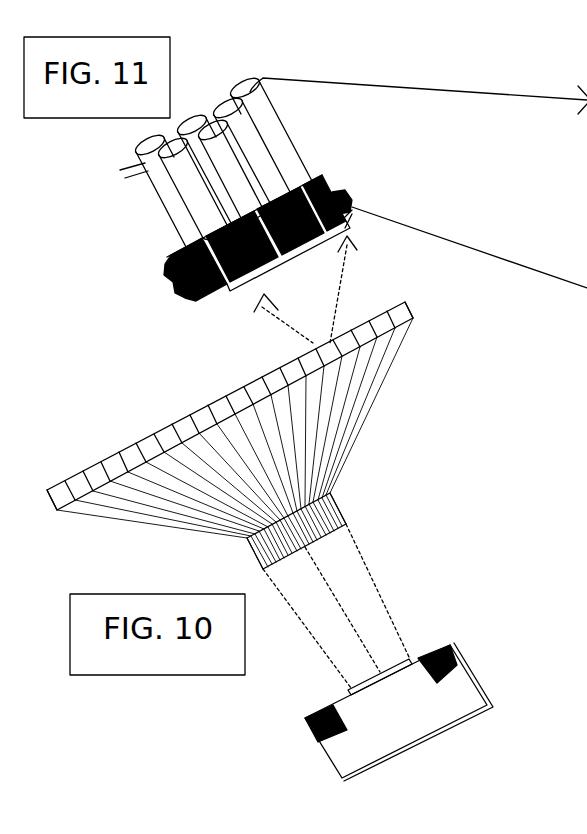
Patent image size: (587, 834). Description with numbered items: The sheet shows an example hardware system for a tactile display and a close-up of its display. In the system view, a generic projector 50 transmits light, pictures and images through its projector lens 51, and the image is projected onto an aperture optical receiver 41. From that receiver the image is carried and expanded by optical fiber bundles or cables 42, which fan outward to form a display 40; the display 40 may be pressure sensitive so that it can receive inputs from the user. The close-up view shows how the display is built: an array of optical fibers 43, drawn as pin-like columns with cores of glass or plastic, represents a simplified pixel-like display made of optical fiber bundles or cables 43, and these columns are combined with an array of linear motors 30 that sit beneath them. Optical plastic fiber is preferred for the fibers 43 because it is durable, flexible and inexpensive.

In FIG. 11, the linear motor array 30 is at (322, 177).
In FIG. 11, the optical fiber columns 43 is at (357, 207).
In FIG. 10, the display screen 40 is at (417, 315).
In FIG. 10, the aperture optical receiver 41 is at (347, 513).
In FIG. 10, the optical fiber bundles 42 is at (373, 405).
In FIG. 10, the projector 50 is at (462, 680).
In FIG. 10, the projector lens 51 is at (405, 653).